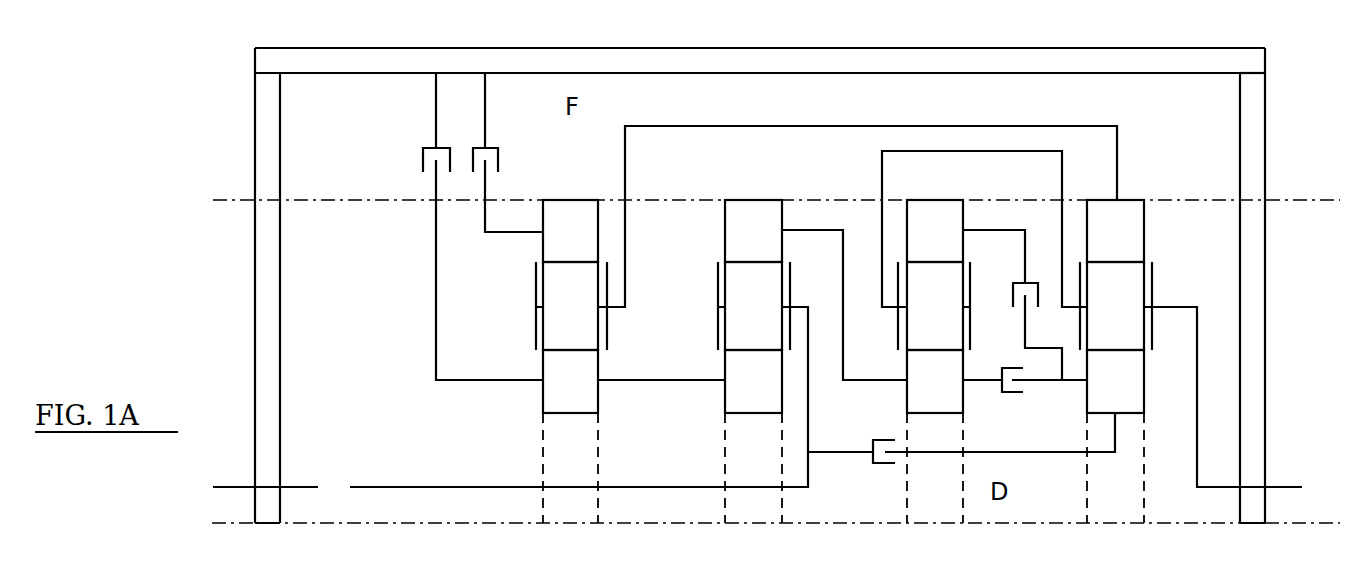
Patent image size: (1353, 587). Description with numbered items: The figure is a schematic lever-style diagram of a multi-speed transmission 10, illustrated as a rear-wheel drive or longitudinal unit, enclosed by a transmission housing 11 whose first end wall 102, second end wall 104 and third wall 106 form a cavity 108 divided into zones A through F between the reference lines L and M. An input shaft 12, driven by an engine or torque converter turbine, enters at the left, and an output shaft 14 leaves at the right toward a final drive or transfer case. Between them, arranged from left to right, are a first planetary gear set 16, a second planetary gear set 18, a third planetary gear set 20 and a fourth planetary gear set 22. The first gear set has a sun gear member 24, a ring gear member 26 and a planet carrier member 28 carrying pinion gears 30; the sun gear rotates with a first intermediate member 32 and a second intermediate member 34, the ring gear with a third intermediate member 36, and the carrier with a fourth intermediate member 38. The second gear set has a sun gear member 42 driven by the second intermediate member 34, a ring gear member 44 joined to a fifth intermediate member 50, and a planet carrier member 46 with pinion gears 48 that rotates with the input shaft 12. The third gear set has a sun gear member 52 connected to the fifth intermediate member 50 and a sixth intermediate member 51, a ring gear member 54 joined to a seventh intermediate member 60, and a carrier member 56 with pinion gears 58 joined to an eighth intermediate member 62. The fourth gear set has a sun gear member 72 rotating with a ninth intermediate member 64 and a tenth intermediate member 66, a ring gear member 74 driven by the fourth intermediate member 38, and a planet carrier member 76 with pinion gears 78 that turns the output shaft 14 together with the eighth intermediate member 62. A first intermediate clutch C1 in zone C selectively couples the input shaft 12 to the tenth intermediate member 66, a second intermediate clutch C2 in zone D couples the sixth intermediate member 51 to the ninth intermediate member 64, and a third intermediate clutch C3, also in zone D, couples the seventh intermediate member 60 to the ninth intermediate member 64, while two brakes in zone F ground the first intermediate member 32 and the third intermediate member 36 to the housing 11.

The transmission 10 is at (1286, 99).
The transmission housing 11 is at (756, 270).
The input shaft 12 is at (378, 487).
The output shaft 14 is at (1281, 488).
The first planetary gear set 16 is at (546, 361).
The second planetary gear set 18 is at (752, 361).
The third planetary gear set 20 is at (920, 361).
The fourth planetary gear set 22 is at (1120, 361).
The sun gear member 24 is at (570, 381).
The ring gear member 26 is at (570, 231).
The planet carrier member 28 is at (535, 318).
The pinion gears 30 is at (570, 306).
The first intermediate member 32 is at (436, 289).
The second intermediate member 34 is at (640, 382).
The third intermediate member 36 is at (512, 233).
The fourth intermediate member 38 is at (897, 126).
The sun gear member 42 is at (753, 381).
The ring gear member 44 is at (753, 231).
The planet carrier member 46 is at (720, 306).
The pinion gears 48 is at (753, 306).
The fifth intermediate member 50 is at (845, 263).
The sixth intermediate member 51 is at (990, 383).
The sun gear member 52 is at (935, 381).
The ring gear member 54 is at (935, 231).
The carrier member 56 is at (895, 320).
The pinion gears 58 is at (935, 306).
The seventh intermediate member 60 is at (1030, 256).
The eighth intermediate member 62 is at (960, 150).
The ninth intermediate member 64 is at (1045, 352).
The tenth intermediate member 66 is at (952, 458).
The sun gear member 72 is at (1115, 381).
The ring gear member 74 is at (1115, 231).
The planet carrier member 76 is at (1152, 282).
The pinion gears 78 is at (1115, 306).
The first end wall 102 is at (268, 118).
The second end wall 104 is at (1252, 138).
The third wall 106 is at (823, 58).
The cavity 108 is at (1217, 98).
The first intermediate clutch C1 is at (876, 436).
The second intermediate clutch C2 is at (1006, 366).
The third intermediate clutch C3 is at (1034, 285).